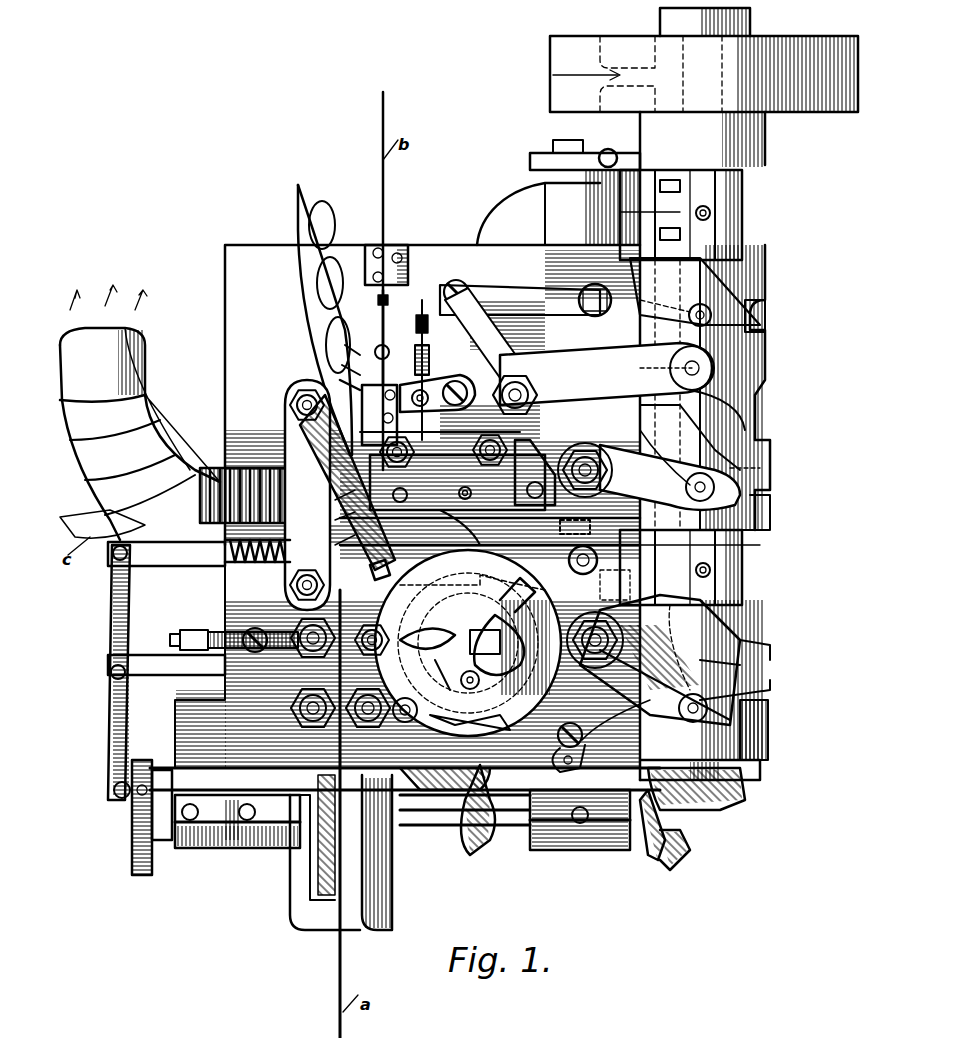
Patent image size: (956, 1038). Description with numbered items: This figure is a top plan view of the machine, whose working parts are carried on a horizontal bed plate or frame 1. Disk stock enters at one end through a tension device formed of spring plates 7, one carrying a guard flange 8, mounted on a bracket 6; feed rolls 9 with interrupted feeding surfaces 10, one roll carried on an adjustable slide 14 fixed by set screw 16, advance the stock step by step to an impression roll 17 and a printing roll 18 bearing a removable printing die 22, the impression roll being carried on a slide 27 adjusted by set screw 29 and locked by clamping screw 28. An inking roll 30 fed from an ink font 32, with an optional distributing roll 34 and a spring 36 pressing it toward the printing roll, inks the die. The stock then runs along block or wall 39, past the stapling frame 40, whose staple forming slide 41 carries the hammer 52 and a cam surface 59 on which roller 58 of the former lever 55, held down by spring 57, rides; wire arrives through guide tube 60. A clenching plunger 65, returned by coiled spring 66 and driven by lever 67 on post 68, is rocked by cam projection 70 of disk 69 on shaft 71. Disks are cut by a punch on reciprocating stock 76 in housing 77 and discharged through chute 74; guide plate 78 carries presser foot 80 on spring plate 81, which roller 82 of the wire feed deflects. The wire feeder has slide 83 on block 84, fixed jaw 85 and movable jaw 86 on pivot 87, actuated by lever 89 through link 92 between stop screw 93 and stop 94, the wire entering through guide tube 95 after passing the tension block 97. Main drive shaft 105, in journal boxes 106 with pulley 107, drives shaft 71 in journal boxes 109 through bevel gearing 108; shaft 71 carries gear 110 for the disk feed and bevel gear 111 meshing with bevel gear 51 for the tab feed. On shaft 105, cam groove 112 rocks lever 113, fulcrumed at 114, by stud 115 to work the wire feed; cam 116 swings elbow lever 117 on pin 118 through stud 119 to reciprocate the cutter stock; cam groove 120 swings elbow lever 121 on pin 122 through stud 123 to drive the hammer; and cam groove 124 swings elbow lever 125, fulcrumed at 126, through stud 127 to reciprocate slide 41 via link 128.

The bed plate or frame 1 is at (225, 295).
The guide plate or bracket 6 is at (395, 855).
The spring plates 7 is at (395, 880).
The longitudinal horizontal flange 8 is at (345, 860).
The feed rolls 9 is at (296, 700).
The feeding surfaces 10 is at (575, 655).
The adjustable slide 14 is at (420, 720).
The set screw 16 is at (470, 730).
The impression roll 17 is at (290, 620).
The printing roll 18 is at (418, 625).
The printing die 22 is at (422, 679).
The adjustable slide 27 is at (253, 660).
The clamping screw 28 is at (275, 632).
The set screw 29 is at (235, 630).
The inking roll 30 is at (448, 620).
The ink font or reservoir 32 is at (528, 605).
The distributing roll 34 is at (490, 678).
The spring 36 is at (585, 735).
The block or wall 39 is at (325, 521).
The frame or block of the stapling mechanism 40 is at (505, 596).
The staple forming slide 41 is at (558, 528).
The bevel gear 51 is at (470, 800).
The staple driving hammer 52 is at (568, 560).
The vertically swinging lever 55 is at (445, 565).
The spring 57 is at (340, 450).
The roller 58 is at (421, 496).
The cam surface 59 is at (467, 522).
The wire guide tube 60 is at (324, 544).
The clenching tool or plunger 65 is at (170, 570).
The coiled spring 66 is at (262, 565).
The lever 67 is at (112, 628).
The post 68 is at (165, 680).
The disk 69 is at (140, 878).
The cam projection 70 is at (130, 800).
The shaft 71 is at (165, 845).
The disk discharge pipe or chute 74 is at (175, 435).
The reciprocating stock 76 is at (525, 490).
The slideway or housing 77 is at (428, 480).
The guide plate 78 is at (340, 275).
The presser foot 80 is at (323, 494).
The spring plate 81 is at (380, 350).
The roller 82 is at (290, 402).
The reciprocating slide 83 is at (388, 405).
The block 84 is at (480, 483).
The fixed wire gripping jaw 85 is at (345, 385).
The movable wire gripping jaw 86 is at (350, 375).
The pivot 87 is at (350, 355).
The lever 89 is at (437, 393).
The link 92 is at (475, 343).
The set screw 93 is at (433, 315).
The stop 94 is at (412, 440).
The guide tube 95 is at (430, 318).
The block 97 is at (382, 245).
The main drive shaft 105 is at (735, 160).
The journal boxes 106 is at (735, 210).
The drive wheel or pulley 107 is at (704, 60).
The bevel gearing 108 is at (690, 845).
The journal boxes 109 is at (228, 848).
The gear 110 is at (318, 855).
The bevel gear 111 is at (470, 850).
The cam groove 112 is at (765, 315).
The lever 113 is at (515, 295).
The fulcrum 114 is at (575, 298).
The depending stud 115 is at (695, 292).
The cam groove 116 is at (765, 410).
The elbow lever 117 is at (622, 386).
The vertical pin 118 is at (540, 388).
The depending stud 119 is at (720, 372).
The cam groove 120 is at (760, 500).
The horizontal elbow lever 121 is at (655, 480).
The vertical pin 122 is at (600, 440).
The depending stud 123 is at (735, 470).
The cam groove 124 is at (740, 642).
The elbow lever 125 is at (745, 668).
The fulcrum 126 is at (655, 640).
The depending stud 127 is at (768, 715).
The link 128 is at (720, 546).